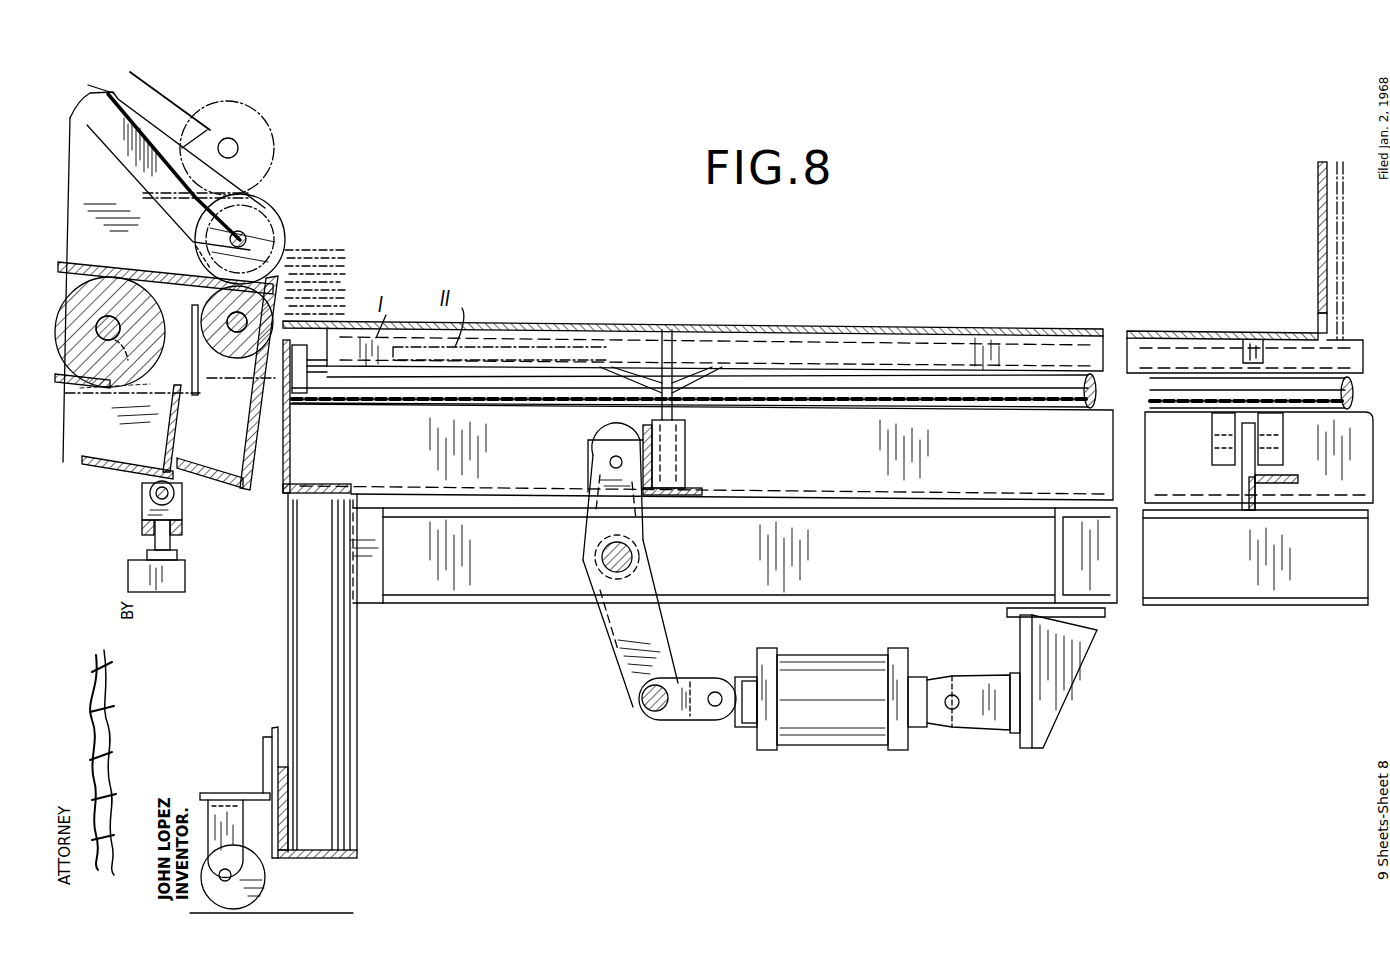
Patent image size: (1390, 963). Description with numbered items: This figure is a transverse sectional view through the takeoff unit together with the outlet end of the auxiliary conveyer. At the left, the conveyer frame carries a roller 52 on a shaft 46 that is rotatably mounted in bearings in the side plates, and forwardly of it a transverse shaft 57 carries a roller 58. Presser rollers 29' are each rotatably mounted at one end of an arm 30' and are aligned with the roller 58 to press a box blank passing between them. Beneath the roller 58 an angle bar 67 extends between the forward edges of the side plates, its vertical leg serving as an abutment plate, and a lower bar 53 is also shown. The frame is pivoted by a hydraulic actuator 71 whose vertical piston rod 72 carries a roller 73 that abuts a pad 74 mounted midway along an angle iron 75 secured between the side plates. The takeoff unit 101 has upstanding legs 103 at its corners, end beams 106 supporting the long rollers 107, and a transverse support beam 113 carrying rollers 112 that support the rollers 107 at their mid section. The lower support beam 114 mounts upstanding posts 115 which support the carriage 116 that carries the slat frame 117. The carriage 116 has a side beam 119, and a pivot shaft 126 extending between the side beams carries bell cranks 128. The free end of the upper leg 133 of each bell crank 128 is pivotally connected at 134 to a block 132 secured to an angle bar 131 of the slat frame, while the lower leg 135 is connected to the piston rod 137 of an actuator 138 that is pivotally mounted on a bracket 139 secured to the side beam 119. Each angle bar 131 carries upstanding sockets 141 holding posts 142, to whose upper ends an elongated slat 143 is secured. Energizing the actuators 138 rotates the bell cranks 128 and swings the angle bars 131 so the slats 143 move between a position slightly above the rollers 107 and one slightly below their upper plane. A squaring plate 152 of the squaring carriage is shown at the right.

The arm 30' is at (164, 267).
The presser roller 29' is at (254, 192).
The roller 52 is at (120, 262).
The roller 58 is at (196, 262).
The shaft 46 is at (150, 338).
The transverse shaft 57 is at (232, 338).
The bar 53 is at (100, 388).
The angle bar 67 is at (243, 440).
The angle iron 75 is at (170, 438).
The pad 74 is at (130, 472).
The roller 73 is at (175, 500).
The piston rod 72 is at (178, 540).
The hydraulic actuator 71 is at (128, 570).
The end beam 106 is at (290, 456).
The apparatus 101 is at (1080, 312).
The squaring plate 152 is at (1318, 273).
The upstanding post 142 is at (668, 328).
The slat 143 is at (798, 314).
The angle bar 131 is at (643, 432).
The block 132 is at (598, 450).
The pivotal connection 134 is at (608, 464).
The upstanding socket 141 is at (685, 450).
The roller 107 is at (750, 408).
The slat frame 117 is at (700, 466).
The roller 112 is at (1212, 441).
The transverse support beam 113 is at (1275, 490).
The pivot shaft 126 is at (602, 556).
The upper leg 133 is at (640, 532).
The carriage 116 is at (505, 610).
The lower leg 135 is at (663, 620).
The bell crank 128 is at (600, 642).
The upstanding post 115 is at (330, 660).
The piston rod 137 is at (725, 722).
The actuator 138 is at (850, 728).
The bracket 139 is at (1060, 715).
The side beam 119 is at (1243, 600).
The lower support beam 114 is at (338, 858).
The upstanding leg 103 is at (258, 888).